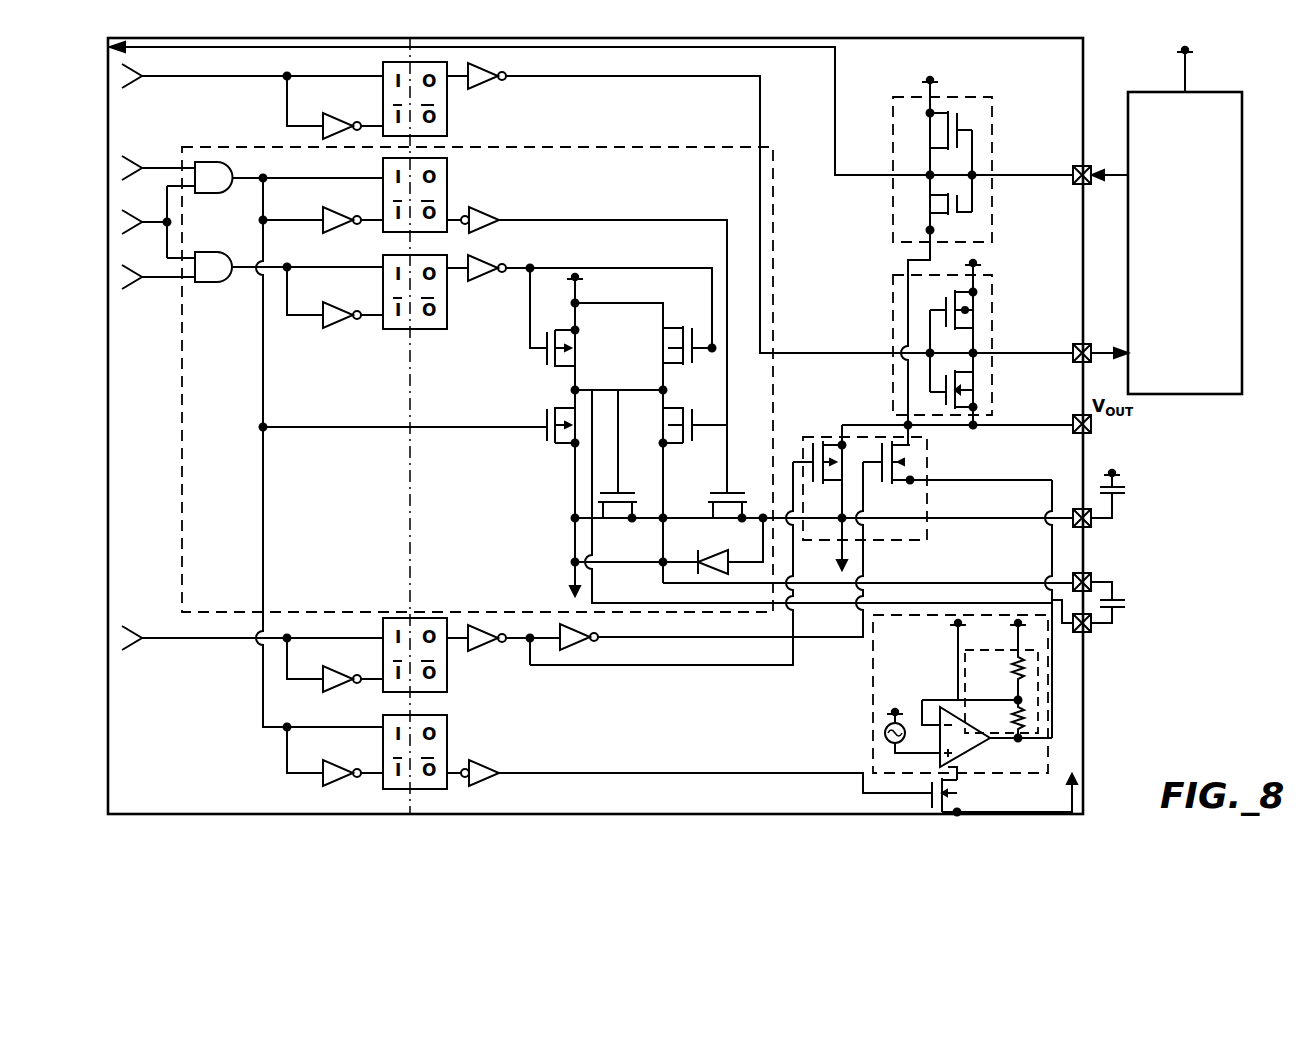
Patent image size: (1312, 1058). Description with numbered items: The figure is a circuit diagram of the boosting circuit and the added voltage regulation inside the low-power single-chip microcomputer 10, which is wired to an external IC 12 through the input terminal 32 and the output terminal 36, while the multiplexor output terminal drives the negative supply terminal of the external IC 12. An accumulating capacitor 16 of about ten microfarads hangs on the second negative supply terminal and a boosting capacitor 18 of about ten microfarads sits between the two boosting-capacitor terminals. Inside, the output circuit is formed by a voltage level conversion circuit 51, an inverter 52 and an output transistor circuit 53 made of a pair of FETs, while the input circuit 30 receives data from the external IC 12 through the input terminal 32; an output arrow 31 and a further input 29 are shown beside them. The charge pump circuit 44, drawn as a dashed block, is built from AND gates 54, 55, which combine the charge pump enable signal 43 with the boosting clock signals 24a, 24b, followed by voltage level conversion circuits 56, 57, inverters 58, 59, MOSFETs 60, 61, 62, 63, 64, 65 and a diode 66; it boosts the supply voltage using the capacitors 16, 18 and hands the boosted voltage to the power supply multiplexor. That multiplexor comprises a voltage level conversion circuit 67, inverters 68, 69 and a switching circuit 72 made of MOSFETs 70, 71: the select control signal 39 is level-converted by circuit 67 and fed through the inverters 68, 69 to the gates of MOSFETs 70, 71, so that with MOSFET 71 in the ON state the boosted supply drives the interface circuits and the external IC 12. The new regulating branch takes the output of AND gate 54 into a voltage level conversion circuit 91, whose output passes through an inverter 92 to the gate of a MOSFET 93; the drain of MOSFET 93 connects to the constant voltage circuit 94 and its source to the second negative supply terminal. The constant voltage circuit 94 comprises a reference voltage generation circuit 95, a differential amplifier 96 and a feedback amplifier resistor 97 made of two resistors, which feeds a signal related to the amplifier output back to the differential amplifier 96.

The low-power single-chip microcomputer 10 is at (1083, 62).
The external IC 12 is at (1170, 106).
The accumulating capacitor 16 is at (1118, 484).
The boosting capacitor 18 is at (1118, 597).
The boosting clock signal 24a is at (132, 163).
The boosting clock signal 24b is at (132, 282).
The input 29 is at (152, 78).
The input circuit 30 is at (995, 143).
The output 31 is at (152, 48).
The input terminal 32 is at (1072, 168).
The output terminal 36 is at (1072, 346).
The select control signal 39 is at (155, 640).
The charge pump enable signal 43 is at (156, 212).
The charge pump circuit 44 is at (625, 148).
The voltage level conversion circuit 51 is at (383, 110).
The inverter 52 is at (503, 80).
The output transistor circuit 53 is at (995, 306).
The AND gate 54 is at (213, 162).
The AND gate 55 is at (210, 255).
The voltage level conversion circuit 56 is at (447, 178).
The voltage level conversion circuit 57 is at (386, 328).
The inverter 58 is at (493, 216).
The inverter 59 is at (493, 275).
The MOSFET 60 is at (543, 362).
The MOSFET 61 is at (545, 420).
The MOSFET 62 is at (698, 324).
The MOSFET 63 is at (700, 412).
The MOSFET 64 is at (622, 493).
The MOSFET 65 is at (727, 490).
The diode 66 is at (716, 594).
The voltage level conversion circuit 67 is at (447, 676).
The inverter 68 is at (493, 645).
The inverter 69 is at (582, 652).
The MOSFET 70 is at (812, 470).
The MOSFET 71 is at (882, 472).
The switching circuit 72 is at (926, 446).
The voltage level conversion circuit 91 is at (447, 735).
The inverter 92 is at (487, 770).
The MOSFET 93 is at (928, 798).
The constant voltage circuit 94 is at (872, 692).
The reference voltage generation circuit 95 is at (885, 736).
The differential amplifier 96 is at (972, 748).
The feedback amplifier resistor 97 is at (962, 676).